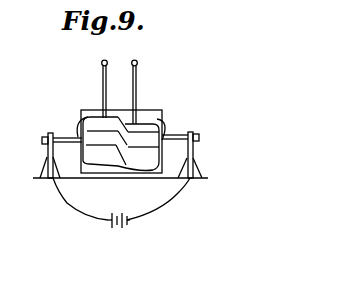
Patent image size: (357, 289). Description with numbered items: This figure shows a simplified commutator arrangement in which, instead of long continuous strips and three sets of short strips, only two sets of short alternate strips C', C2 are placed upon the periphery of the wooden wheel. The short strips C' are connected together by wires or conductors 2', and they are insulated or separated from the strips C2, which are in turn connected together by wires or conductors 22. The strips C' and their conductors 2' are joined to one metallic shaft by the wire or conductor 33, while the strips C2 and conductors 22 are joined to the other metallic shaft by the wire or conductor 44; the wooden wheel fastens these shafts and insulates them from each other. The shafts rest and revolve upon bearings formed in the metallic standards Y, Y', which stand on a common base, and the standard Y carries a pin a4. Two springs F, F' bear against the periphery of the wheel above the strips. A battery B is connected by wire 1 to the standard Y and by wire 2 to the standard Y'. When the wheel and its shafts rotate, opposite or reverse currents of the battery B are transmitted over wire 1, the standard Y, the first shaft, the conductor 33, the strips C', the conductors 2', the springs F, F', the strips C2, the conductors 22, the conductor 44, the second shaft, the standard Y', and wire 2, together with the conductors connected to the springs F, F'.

The spring F is at (95, 89).
The spring F' is at (144, 92).
The short strip C' is at (121, 141).
The short strip C2 is at (117, 137).
The wire or conductor 2' is at (123, 139).
The wire or conductor 22 is at (90, 154).
The wire 2 is at (158, 199).
The wire 1 is at (80, 199).
The wire or conductor 33 is at (78, 127).
The wire or conductor 44 is at (167, 129).
The metallic standard Y is at (48, 155).
The metallic standard Y' is at (183, 155).
The pin a4 is at (62, 145).
The battery B is at (119, 231).